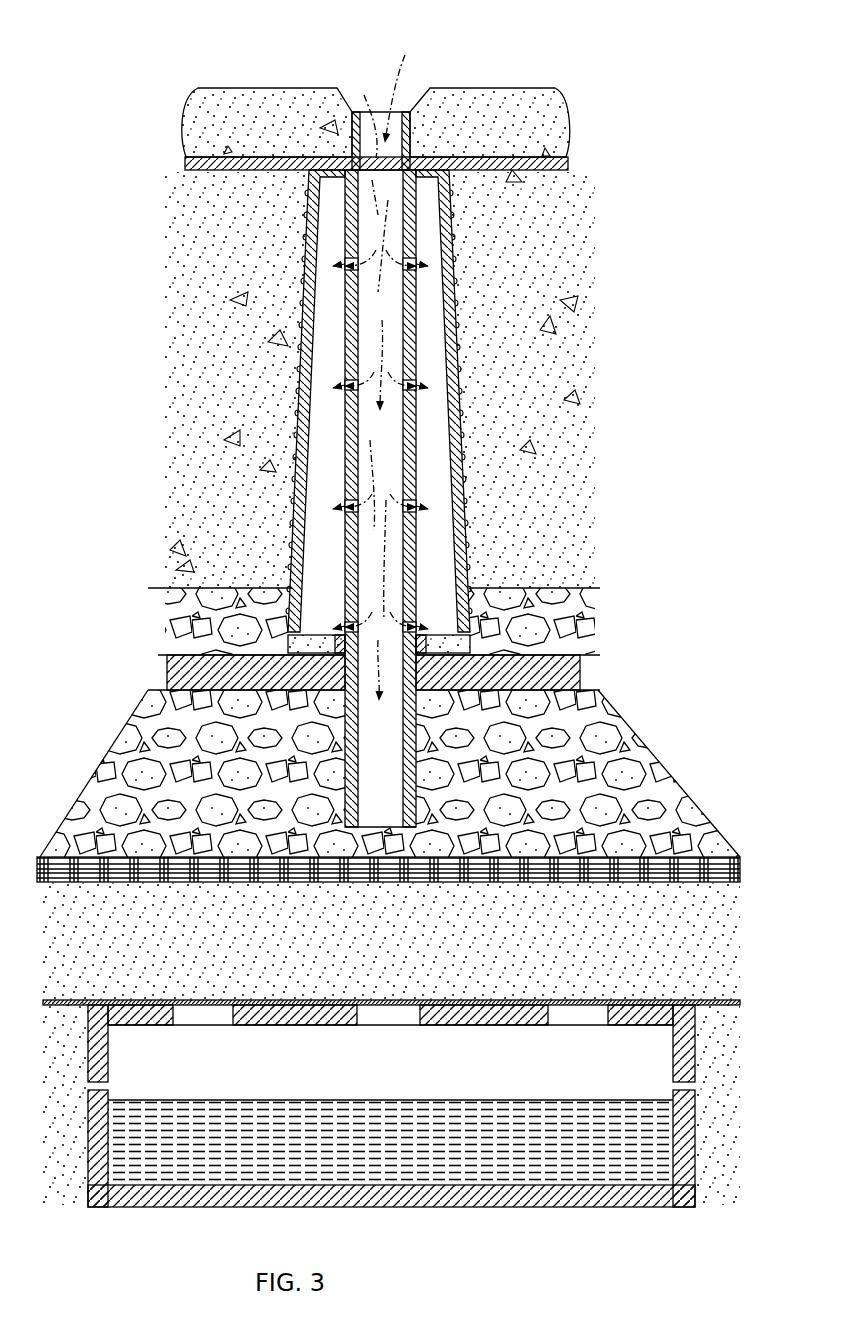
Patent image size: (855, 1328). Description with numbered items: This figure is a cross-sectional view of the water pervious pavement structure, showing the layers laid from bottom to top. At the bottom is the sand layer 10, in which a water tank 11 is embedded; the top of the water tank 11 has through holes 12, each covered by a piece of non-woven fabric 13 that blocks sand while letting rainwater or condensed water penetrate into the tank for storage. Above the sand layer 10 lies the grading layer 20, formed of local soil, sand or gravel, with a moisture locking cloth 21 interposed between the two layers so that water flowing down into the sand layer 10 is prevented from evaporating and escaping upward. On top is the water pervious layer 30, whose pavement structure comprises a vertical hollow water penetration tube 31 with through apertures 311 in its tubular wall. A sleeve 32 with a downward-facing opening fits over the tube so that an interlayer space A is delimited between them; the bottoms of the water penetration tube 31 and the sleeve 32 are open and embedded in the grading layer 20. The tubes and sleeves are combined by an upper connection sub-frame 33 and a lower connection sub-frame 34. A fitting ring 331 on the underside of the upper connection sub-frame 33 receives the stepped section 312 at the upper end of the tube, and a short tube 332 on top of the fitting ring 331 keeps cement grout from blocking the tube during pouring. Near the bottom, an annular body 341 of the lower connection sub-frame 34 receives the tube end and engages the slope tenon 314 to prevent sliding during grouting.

The sand layer 10 is at (648, 935).
The water tank 11 is at (683, 1110).
The through holes 12 is at (390, 1015).
The non-woven fabric 13 is at (573, 1000).
The grading layer 20 is at (634, 743).
The moisture locking cloth 21 is at (717, 858).
The water pervious layer 30 is at (582, 338).
The water penetration tube 31 is at (418, 527).
The through apertures 311 is at (418, 385).
The stepped section 312 is at (416, 207).
The slope tenon 314 is at (345, 695).
The sleeve 32 is at (297, 482).
The upper connection sub-frame 33 is at (523, 158).
The fitting rings 331 is at (345, 208).
The short tube 332 is at (408, 125).
The lower connection sub-frame 34 is at (577, 677).
The annular bodies 341 is at (520, 620).
The interlayer space A is at (334, 537).